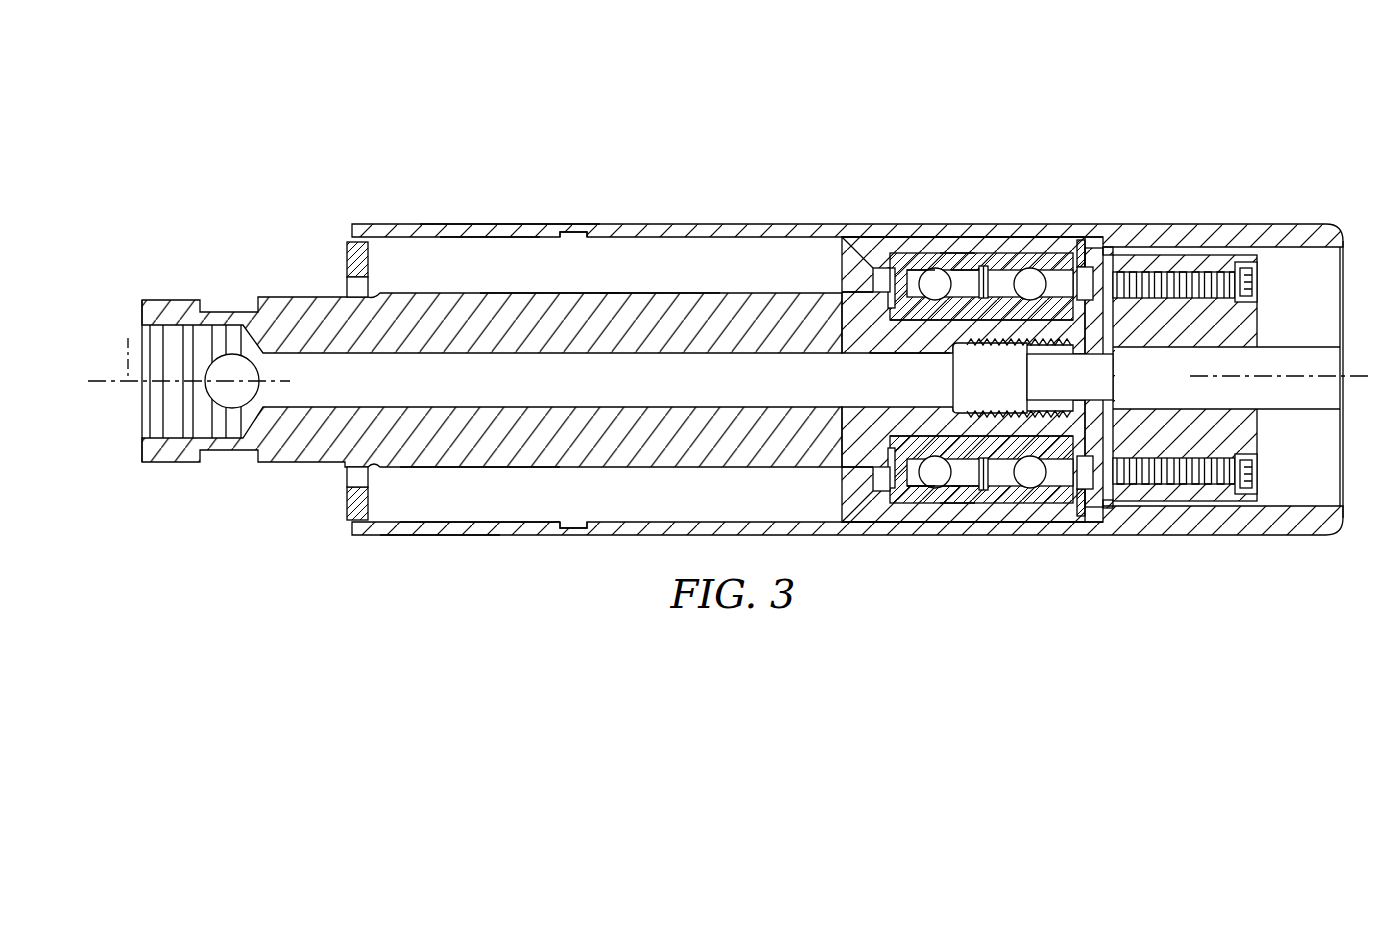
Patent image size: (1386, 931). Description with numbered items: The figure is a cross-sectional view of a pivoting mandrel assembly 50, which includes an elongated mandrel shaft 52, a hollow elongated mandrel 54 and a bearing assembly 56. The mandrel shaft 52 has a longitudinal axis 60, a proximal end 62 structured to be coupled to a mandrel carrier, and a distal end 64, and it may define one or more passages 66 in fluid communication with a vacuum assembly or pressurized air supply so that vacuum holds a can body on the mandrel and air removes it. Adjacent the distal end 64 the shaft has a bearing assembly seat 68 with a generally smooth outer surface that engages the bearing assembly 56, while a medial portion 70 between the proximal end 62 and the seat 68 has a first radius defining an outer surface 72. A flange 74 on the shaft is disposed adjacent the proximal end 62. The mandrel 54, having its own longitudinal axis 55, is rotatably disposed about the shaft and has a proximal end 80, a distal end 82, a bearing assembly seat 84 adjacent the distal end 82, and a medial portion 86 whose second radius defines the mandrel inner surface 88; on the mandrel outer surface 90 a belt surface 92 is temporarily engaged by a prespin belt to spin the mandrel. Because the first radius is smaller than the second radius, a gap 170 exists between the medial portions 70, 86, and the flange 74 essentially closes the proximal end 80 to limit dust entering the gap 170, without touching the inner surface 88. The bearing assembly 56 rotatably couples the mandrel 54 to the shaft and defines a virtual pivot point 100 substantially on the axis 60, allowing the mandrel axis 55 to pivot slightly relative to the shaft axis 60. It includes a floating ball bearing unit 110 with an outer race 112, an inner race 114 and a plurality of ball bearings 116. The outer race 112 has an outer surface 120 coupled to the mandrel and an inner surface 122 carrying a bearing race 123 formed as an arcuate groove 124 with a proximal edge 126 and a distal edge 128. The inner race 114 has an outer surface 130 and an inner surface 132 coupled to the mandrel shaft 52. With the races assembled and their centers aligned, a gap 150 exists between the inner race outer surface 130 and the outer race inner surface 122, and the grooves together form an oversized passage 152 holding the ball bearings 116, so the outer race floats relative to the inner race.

The mandrel assembly 50 is at (778, 99).
The mandrel shaft 52 is at (295, 297).
The mandrel 54 is at (745, 223).
The mandrel longitudinal axis 55 is at (176, 366).
The bearing assembly 56 is at (985, 153).
The mandrel shaft longitudinal axis 60 is at (104, 386).
The mandrel shaft proximal end 62 is at (165, 300).
The mandrel shaft distal end 64 is at (1105, 415).
The passage 66 is at (1245, 386).
The bearing assembly seat 68 is at (912, 322).
The mandrel shaft medial portion 70 is at (555, 295).
The outer surface 72 is at (632, 293).
The mandrel shaft flange 74 is at (350, 243).
The mandrel proximal end 80 is at (430, 537).
The mandrel distal end 82 is at (1320, 536).
The mandrel bearing assembly seat 84 is at (938, 252).
The mandrel medial portion 86 is at (637, 228).
The mandrel inner surface 88 is at (484, 246).
The mandrel outer surface 90 is at (823, 223).
The belt surface 92 is at (510, 224).
The virtual pivot point 100 is at (968, 381).
The floating ball bearing unit 110 is at (950, 502).
The outer race 112 is at (985, 265).
The inner race 114 is at (1030, 354).
The ball bearings 116 is at (1035, 275).
The outer race outer surface 120 is at (915, 252).
The outer race inner surface 122 is at (873, 280).
The bearing race 123 is at (922, 268).
The outer race groove 124 is at (957, 255).
The proximal edge 126 is at (888, 290).
The distal edge 128 is at (965, 268).
The inner race outer surface 130 is at (890, 335).
The inner race inner surface 132 is at (886, 312).
The gap 150 is at (1095, 250).
The ball bearing unit passage 152 is at (905, 473).
The gap 170 is at (477, 506).